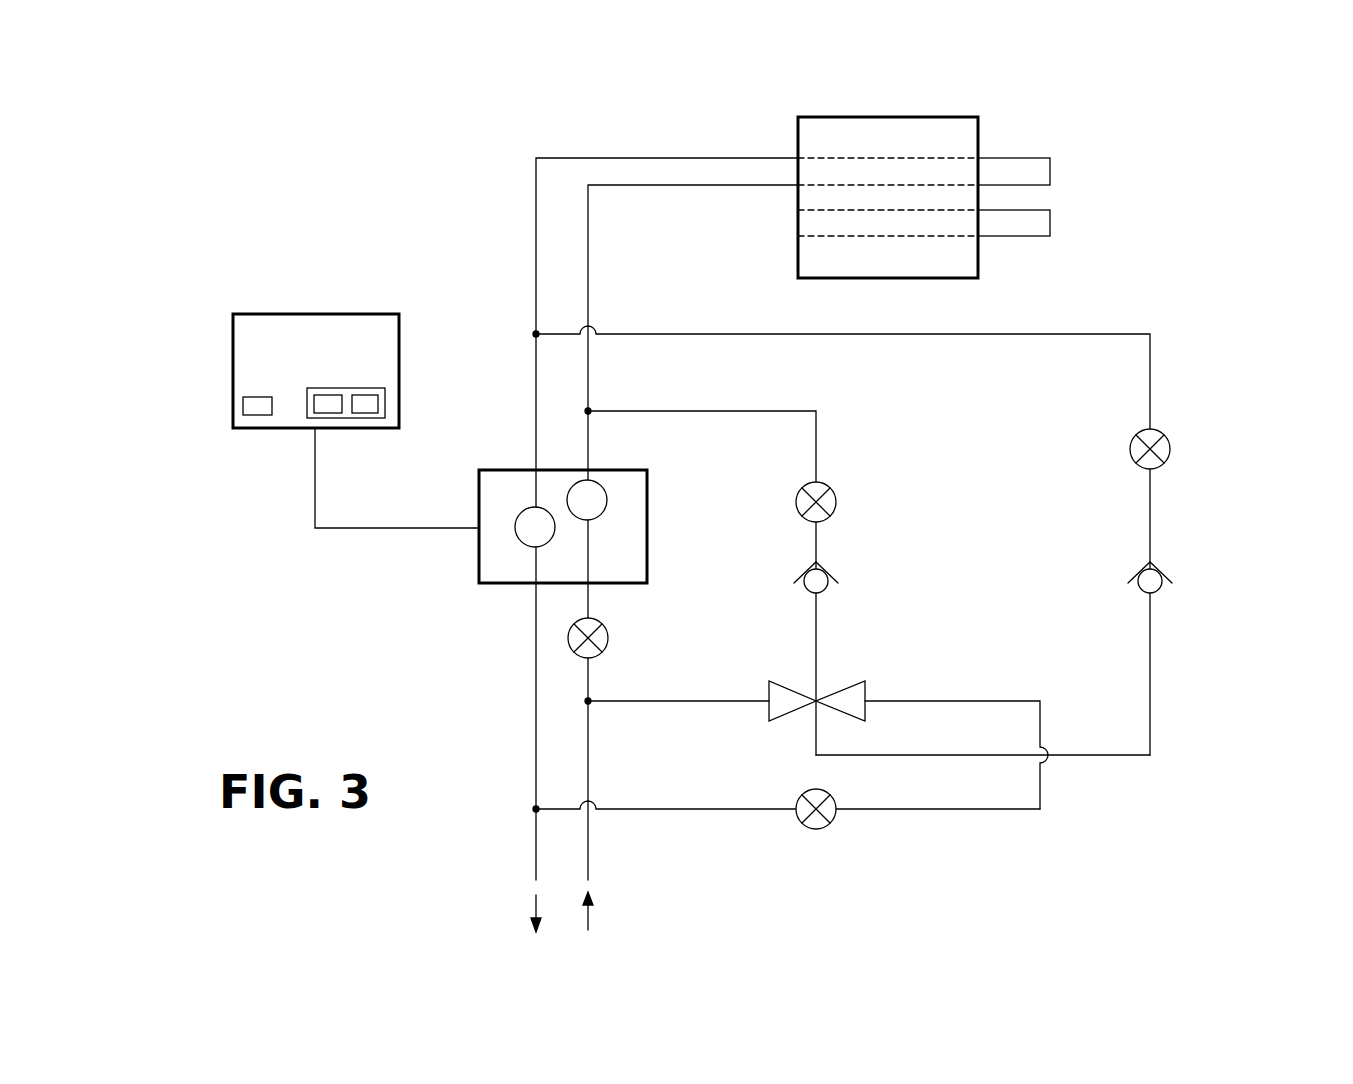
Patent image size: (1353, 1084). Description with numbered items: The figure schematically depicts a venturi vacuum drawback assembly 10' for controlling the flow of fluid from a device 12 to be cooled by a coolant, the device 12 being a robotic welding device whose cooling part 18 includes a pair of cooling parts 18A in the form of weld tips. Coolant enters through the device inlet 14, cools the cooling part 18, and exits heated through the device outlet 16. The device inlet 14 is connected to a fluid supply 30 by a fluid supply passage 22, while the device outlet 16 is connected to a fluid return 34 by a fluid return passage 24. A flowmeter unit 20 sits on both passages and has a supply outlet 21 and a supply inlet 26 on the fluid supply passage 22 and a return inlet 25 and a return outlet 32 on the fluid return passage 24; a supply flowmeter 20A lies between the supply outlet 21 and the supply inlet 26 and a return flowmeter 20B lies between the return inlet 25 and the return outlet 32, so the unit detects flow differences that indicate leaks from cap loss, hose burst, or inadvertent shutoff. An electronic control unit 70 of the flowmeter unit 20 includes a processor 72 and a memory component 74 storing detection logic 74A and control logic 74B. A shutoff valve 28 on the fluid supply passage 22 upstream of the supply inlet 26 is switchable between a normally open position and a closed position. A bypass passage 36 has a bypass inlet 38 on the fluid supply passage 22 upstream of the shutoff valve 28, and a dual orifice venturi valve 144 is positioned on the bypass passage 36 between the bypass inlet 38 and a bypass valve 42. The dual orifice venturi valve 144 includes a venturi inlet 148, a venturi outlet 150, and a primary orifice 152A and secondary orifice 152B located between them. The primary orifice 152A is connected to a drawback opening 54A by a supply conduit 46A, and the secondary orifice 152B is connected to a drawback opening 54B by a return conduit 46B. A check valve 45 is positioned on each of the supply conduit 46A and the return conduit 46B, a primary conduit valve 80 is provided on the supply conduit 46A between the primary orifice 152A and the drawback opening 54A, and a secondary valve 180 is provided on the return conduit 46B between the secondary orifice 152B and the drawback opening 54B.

The venturi vacuum drawback assembly 10' is at (239, 73).
The device 12 is at (803, 112).
The device inlet 14 is at (798, 160).
The device outlet 16 is at (798, 185).
The cooling part 18 is at (955, 117).
The cooling parts 18A is at (1037, 158).
The flowmeter unit 20 is at (655, 525).
The supply flowmeter 20A is at (607, 500).
The return flowmeter 20B is at (555, 527).
The supply outlet 21 is at (592, 447).
The fluid supply passage 22 is at (596, 303).
The fluid return passage 24 is at (530, 232).
The return inlet 25 is at (534, 447).
The supply inlet 26 is at (592, 617).
The shutoff valve 28 is at (608, 642).
The fluid supply 30 is at (588, 927).
The return outlet 32 is at (534, 630).
The fluid return 34 is at (536, 928).
The bypass passage 36 is at (1022, 690).
The bypass inlet 38 is at (590, 698).
The bypass valve 42 is at (830, 795).
The check valve 45 is at (826, 570).
The supply conduit 46A is at (818, 460).
The return conduit 46B is at (1030, 336).
The drawback opening 54A is at (592, 408).
The drawback opening 54B is at (534, 334).
The electronic control unit 70 is at (233, 330).
The processor 72 is at (243, 405).
The memory component 74 is at (362, 388).
The detection logic 74A is at (314, 410).
The control logic 74B is at (378, 404).
The primary conduit valve 80 is at (838, 500).
The dual orifice venturi valve 144 is at (880, 672).
The venturi inlet 148 is at (760, 705).
The venturi outlet 150 is at (880, 703).
The primary orifice 152A is at (816, 701).
The secondary orifice 152B is at (816, 701).
The secondary valve 180 is at (1172, 449).